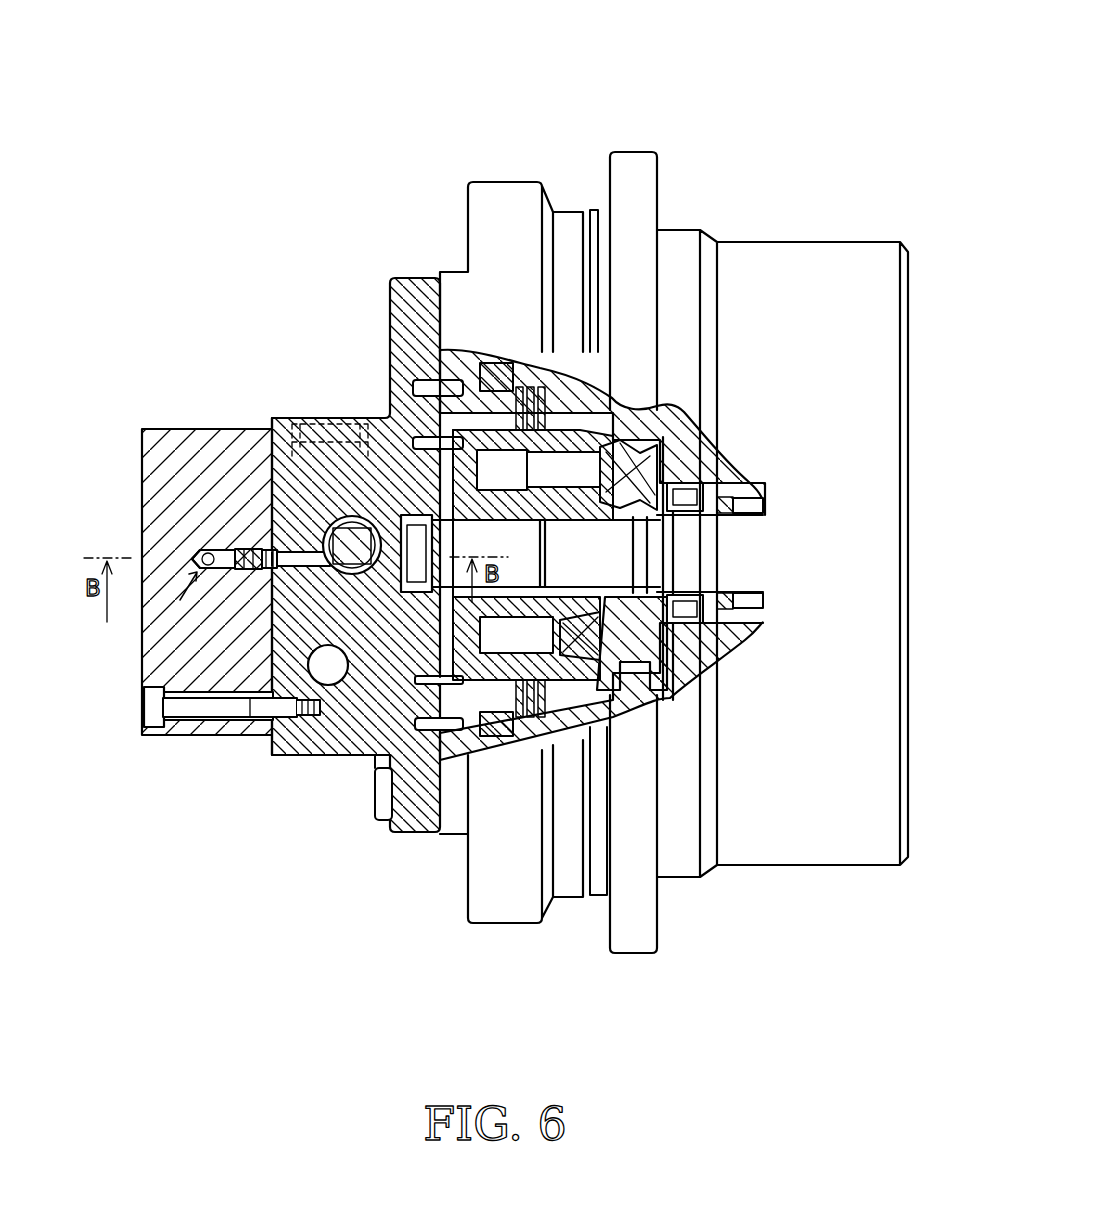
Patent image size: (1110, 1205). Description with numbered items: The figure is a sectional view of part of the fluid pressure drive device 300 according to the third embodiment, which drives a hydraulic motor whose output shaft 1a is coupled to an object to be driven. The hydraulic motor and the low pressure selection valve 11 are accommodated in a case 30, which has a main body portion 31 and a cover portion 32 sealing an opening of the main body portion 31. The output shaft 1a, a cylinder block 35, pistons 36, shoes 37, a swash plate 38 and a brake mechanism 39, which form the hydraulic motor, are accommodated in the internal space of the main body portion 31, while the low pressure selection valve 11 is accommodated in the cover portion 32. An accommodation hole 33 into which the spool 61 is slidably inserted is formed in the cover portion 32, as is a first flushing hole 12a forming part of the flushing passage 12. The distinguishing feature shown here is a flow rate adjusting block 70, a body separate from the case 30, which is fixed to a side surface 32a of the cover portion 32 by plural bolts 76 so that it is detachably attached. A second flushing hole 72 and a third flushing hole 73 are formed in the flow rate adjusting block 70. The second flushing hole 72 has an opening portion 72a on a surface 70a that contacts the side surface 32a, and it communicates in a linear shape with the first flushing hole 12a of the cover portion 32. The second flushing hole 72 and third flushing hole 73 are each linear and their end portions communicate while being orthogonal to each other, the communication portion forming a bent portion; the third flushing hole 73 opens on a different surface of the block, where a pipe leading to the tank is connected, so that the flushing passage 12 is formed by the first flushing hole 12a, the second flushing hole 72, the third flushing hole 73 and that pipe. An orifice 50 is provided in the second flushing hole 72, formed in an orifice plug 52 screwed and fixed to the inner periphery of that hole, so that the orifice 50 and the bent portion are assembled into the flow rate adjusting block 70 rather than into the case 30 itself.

The output shaft 1a is at (722, 554).
The low pressure selection valve 11 is at (360, 590).
The flushing passage 12 is at (150, 625).
The first flushing hole 12a is at (305, 568).
The case 30 is at (412, 93).
The main body portion 31 is at (488, 228).
The cover portion 32 is at (413, 292).
The side surface 32a is at (270, 442).
The accommodation hole 33 is at (335, 540).
The cylinder block 35 is at (586, 680).
The pistons 36 is at (540, 685).
The shoes 37 is at (602, 690).
The swash plate 38 is at (668, 698).
The brake mechanism 39 is at (508, 758).
The orifice 50 is at (225, 550).
The orifice plug 52 is at (240, 547).
The spool 61 is at (355, 530).
The flow rate adjusting block 70 is at (143, 446).
The surface 70a is at (282, 470).
The second flushing hole 72 is at (232, 568).
The opening portion 72a is at (270, 722).
The third flushing hole 73 is at (194, 559).
The bolts 76 is at (193, 712).
The fluid pressure drive device 300 is at (727, 118).